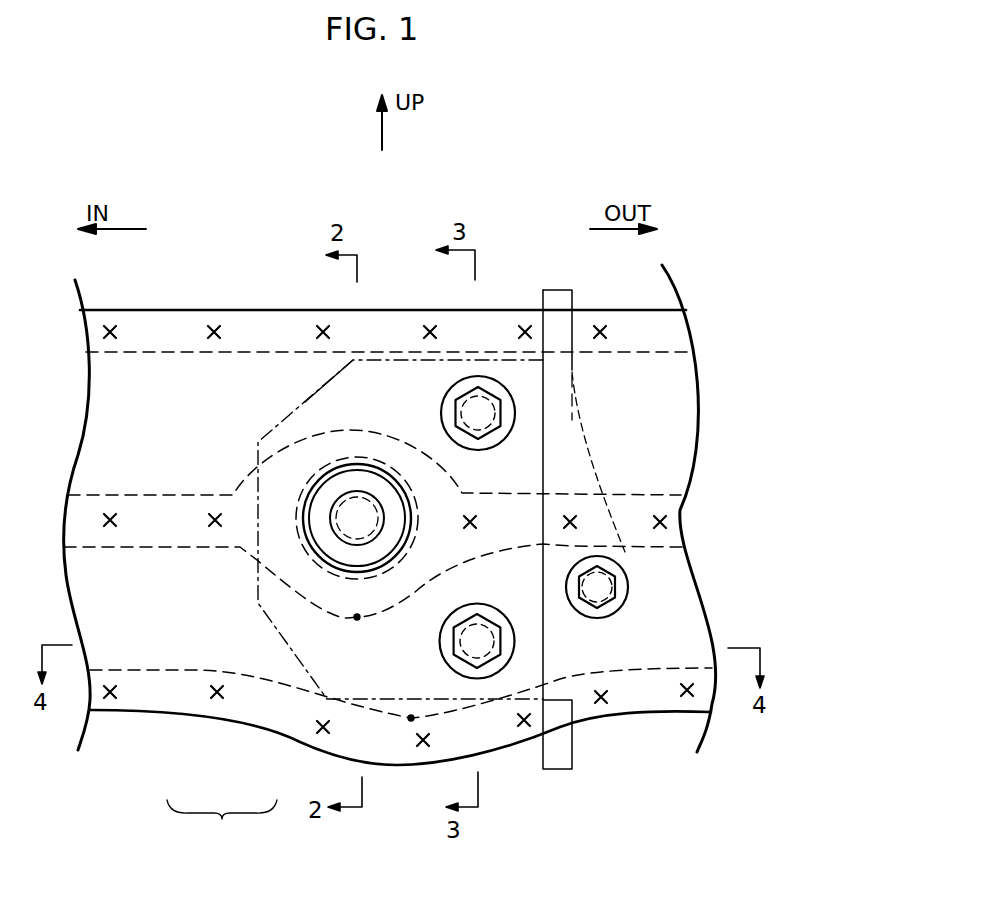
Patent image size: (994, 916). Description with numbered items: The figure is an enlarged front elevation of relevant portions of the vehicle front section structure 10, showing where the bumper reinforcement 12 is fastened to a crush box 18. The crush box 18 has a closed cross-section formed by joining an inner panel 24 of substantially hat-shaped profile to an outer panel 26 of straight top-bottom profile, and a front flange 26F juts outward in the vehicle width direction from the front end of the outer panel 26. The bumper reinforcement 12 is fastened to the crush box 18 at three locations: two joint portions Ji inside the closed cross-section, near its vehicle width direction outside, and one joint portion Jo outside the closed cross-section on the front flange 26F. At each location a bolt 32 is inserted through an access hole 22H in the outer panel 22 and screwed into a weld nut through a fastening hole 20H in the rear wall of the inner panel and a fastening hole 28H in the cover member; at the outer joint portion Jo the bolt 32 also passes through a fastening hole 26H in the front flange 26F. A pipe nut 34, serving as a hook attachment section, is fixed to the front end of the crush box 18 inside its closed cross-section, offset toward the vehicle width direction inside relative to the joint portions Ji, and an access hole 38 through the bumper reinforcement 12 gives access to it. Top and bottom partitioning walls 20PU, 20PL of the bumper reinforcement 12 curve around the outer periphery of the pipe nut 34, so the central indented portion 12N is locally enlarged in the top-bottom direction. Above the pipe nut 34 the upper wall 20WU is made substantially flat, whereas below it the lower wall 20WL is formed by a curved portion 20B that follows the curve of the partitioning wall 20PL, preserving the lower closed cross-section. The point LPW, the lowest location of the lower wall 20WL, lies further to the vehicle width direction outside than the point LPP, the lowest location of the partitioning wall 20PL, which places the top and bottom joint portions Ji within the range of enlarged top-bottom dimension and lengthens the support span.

The vehicle front section structure 10 is at (567, 170).
The bumper reinforcement 12 is at (390, 486).
The indented portion 12N is at (165, 549).
The crush box 18 is at (222, 826).
The curved portion 20B is at (378, 722).
The fastening hole 20H is at (500, 640).
The lower partitioning wall 20PL is at (112, 549).
The upper partitioning wall 20PU is at (283, 460).
The lower wall 20WL is at (372, 797).
The upper wall 20WU is at (282, 352).
The outer panel 22 is at (148, 698).
The access hole 22H is at (503, 433).
The inner panel 24 is at (223, 715).
The outer panel 26 is at (390, 584).
The front flange 26F is at (581, 648).
The fastening hole 26H is at (605, 650).
The fastening hole 28H is at (497, 407).
The bolt 32 is at (482, 385).
The pipe nut 34 is at (358, 488).
The access hole 38 is at (360, 475).
The joint portion Ji is at (442, 507).
The joint portion Jo is at (688, 595).
The lowest point of partitioning wall LPP is at (357, 617).
The lowest point of lower wall LPW is at (411, 720).